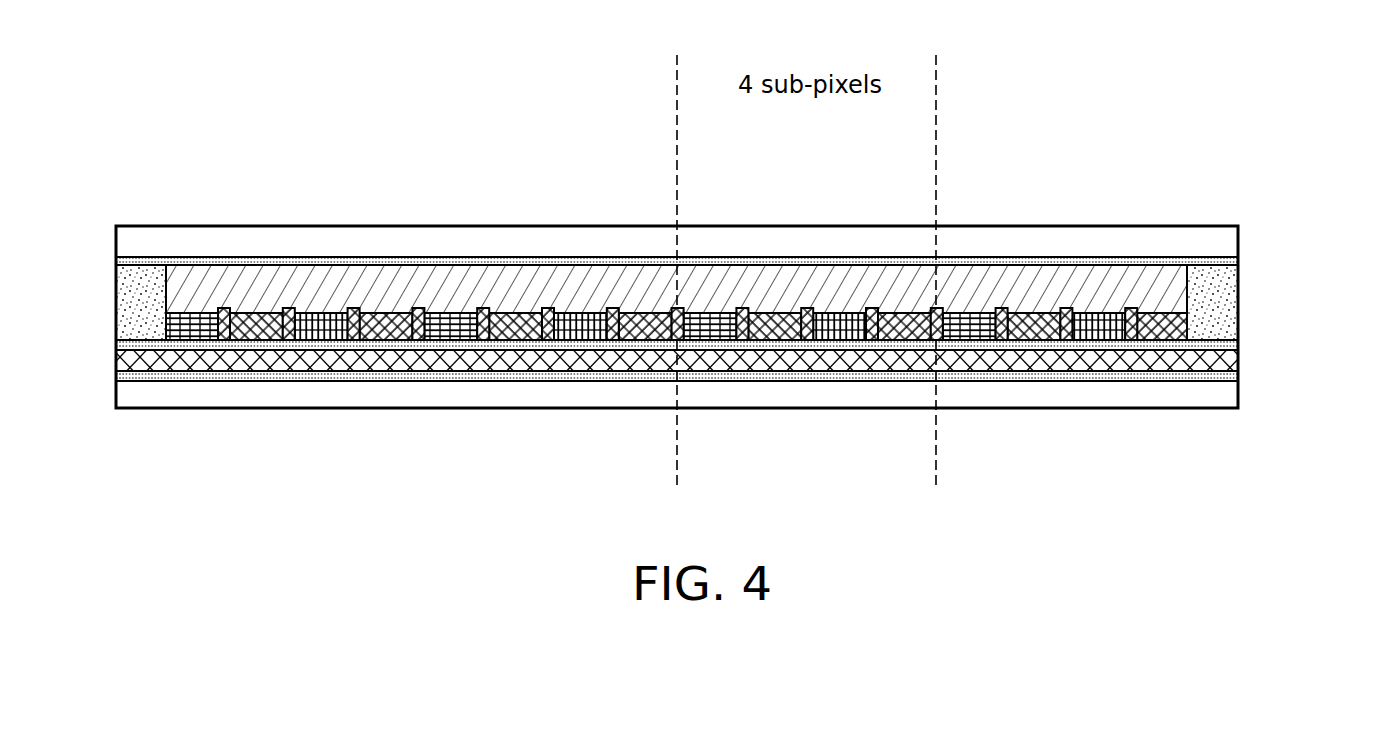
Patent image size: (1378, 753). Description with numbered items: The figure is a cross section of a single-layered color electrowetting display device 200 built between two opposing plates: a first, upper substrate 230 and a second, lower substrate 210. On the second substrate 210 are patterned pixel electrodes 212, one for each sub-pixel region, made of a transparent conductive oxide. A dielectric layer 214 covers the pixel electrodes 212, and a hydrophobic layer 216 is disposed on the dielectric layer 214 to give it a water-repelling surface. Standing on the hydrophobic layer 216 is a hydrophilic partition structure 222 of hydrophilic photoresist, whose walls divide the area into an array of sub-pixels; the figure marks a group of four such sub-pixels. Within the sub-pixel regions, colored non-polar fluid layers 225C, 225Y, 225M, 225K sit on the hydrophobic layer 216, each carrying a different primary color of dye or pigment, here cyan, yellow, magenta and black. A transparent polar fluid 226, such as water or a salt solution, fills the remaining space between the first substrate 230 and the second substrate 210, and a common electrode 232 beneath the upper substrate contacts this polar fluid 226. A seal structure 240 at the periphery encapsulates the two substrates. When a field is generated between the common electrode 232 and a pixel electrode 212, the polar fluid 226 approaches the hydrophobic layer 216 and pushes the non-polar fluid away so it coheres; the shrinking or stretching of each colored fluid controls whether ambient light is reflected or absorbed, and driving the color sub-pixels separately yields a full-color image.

The single-layered color electrowetting display device 200 is at (1293, 122).
The second substrate 210 is at (1225, 398).
The pixel electrodes 212 is at (1235, 378).
The dielectric layer 214 is at (1235, 362).
The hydrophobic layer 216 is at (1228, 346).
The hydrophilic partition structure 222 is at (743, 240).
The non-polar fluid layer 225C is at (707, 323).
The non-polar fluid layer 225Y is at (764, 318).
The non-polar fluid layer 225M is at (846, 325).
The non-polar fluid layer 225K is at (907, 322).
The transparent polar fluid 226 is at (1178, 283).
The first substrate 230 is at (1225, 240).
The common electrode 232 is at (1238, 259).
The seal structure 240 is at (124, 304).